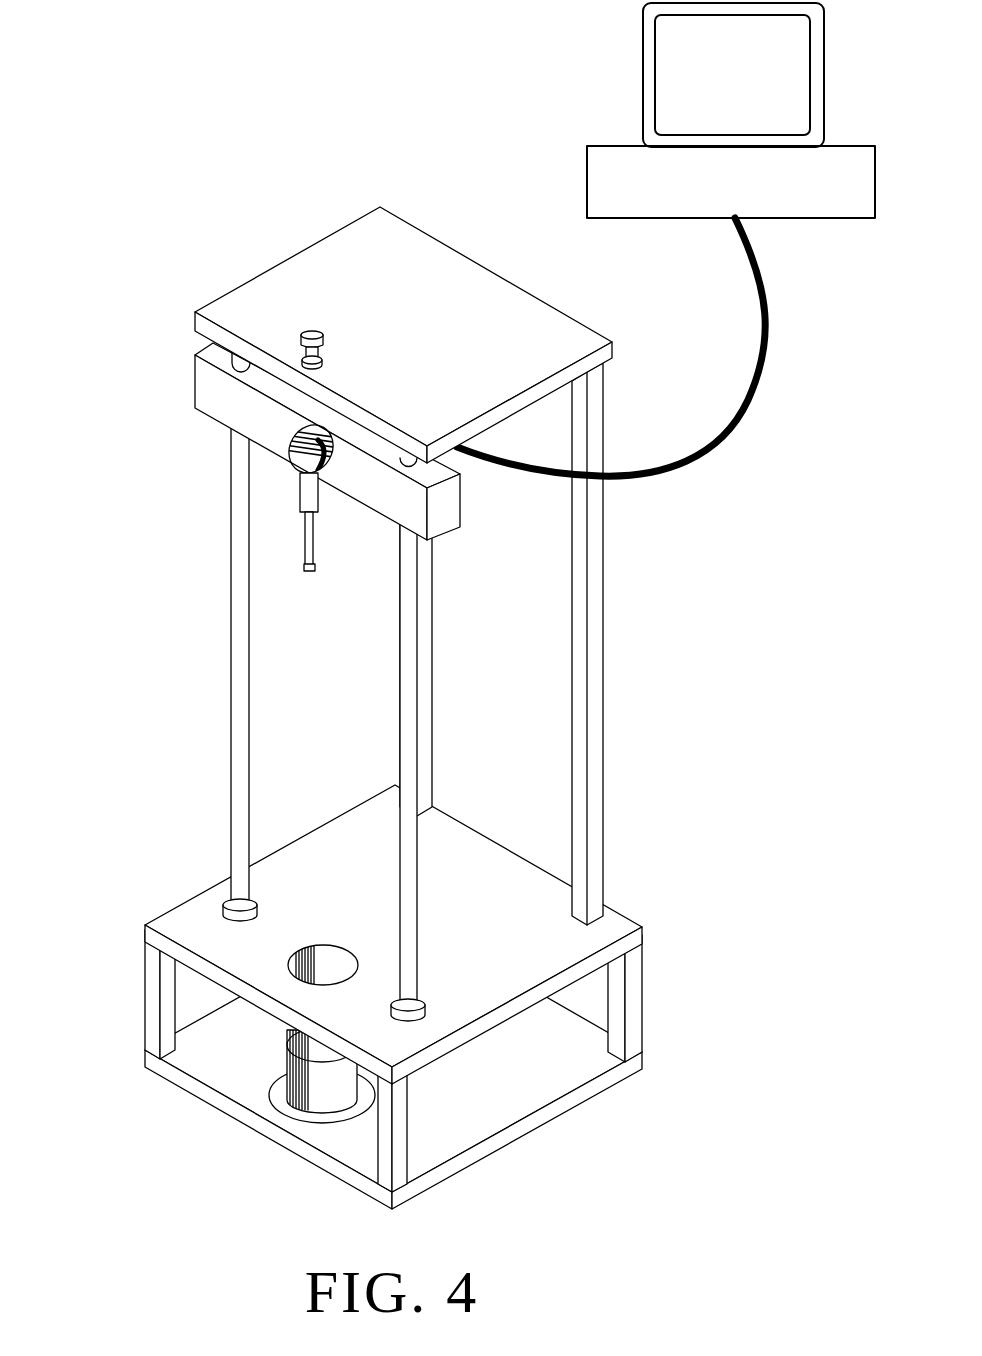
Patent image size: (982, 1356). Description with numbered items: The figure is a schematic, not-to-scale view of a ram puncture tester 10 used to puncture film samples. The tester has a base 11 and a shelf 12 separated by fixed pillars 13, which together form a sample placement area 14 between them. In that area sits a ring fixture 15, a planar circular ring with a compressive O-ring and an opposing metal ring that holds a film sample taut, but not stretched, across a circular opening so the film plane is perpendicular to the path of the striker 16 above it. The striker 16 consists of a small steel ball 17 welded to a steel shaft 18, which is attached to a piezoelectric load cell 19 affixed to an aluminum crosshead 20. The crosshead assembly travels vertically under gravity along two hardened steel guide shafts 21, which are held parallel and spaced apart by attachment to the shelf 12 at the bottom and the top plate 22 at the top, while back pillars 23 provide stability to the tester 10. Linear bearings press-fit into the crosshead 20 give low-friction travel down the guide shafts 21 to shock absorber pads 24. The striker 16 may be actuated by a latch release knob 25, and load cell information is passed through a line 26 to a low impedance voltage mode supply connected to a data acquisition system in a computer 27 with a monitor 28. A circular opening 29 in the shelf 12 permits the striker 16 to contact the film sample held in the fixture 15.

The ram puncture tester 10 is at (457, 708).
The base 11 is at (492, 1074).
The shelf 12 is at (492, 928).
The fixed pillars 13 is at (155, 975).
The sample placement area 14 is at (258, 1086).
The ring fixture 15 is at (312, 1099).
The striker 16 is at (318, 556).
The steel ball 17 is at (306, 570).
The steel shaft 18 is at (316, 545).
The piezoelectric load cell 19 is at (315, 495).
The crosshead 20 is at (345, 499).
The guide shafts 21 is at (232, 697).
The top plate 22 is at (492, 356).
The back pillars 23 is at (432, 648).
The shock absorber pads 24 is at (222, 903).
The latch release knob 25 is at (314, 334).
The line 26 is at (765, 313).
The computer 27 is at (713, 196).
The monitor 28 is at (713, 86).
The circular opening 29 is at (328, 972).